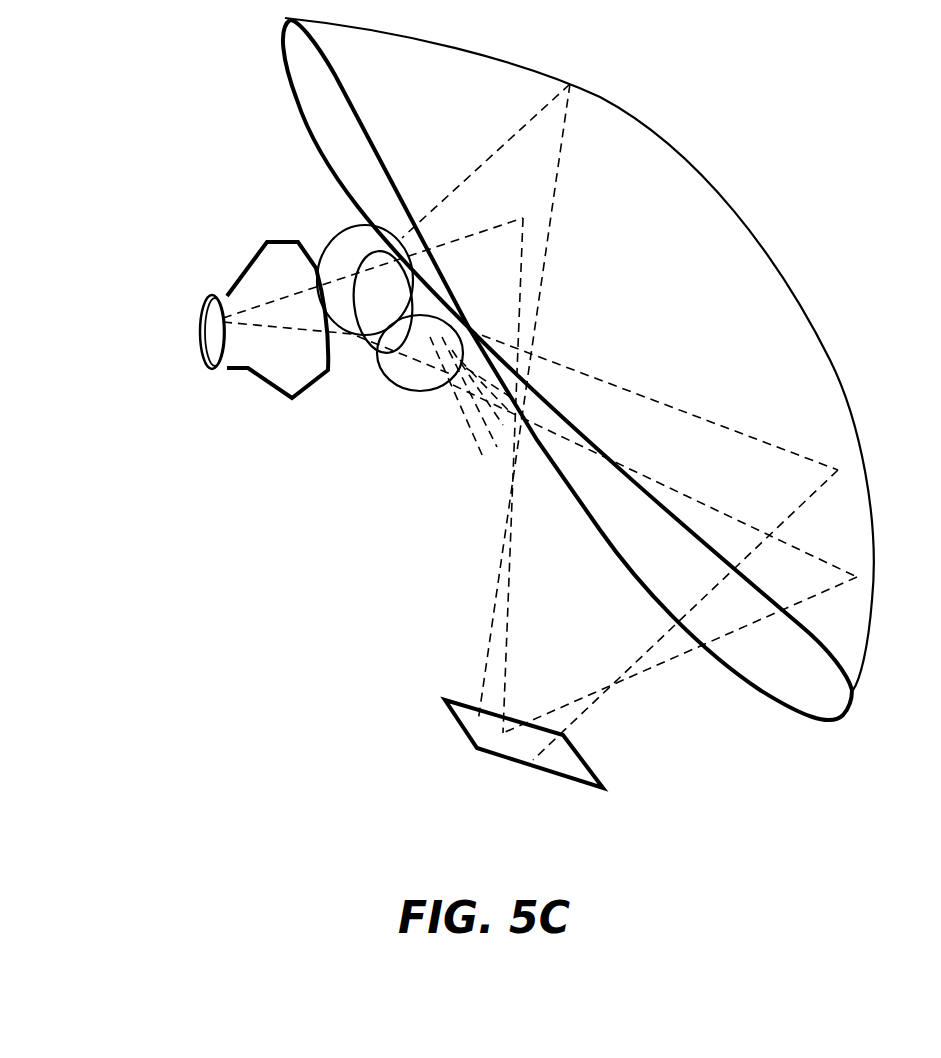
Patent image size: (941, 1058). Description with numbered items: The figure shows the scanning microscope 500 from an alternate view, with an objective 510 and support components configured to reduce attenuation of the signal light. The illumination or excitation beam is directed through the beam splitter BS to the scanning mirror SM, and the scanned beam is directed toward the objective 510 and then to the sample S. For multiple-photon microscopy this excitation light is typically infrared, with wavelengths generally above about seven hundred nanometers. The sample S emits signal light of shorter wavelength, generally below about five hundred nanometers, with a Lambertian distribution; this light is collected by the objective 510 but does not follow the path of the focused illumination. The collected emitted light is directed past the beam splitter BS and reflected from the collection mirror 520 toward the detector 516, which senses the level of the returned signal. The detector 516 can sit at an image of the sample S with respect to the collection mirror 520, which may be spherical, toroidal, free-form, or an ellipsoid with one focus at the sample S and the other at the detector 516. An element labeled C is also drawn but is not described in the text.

The scanning microscope 500 is at (145, 55).
The objective 510 is at (238, 268).
The collection mirror 520 is at (603, 97).
The detector 516 is at (463, 730).
The scanning mirror SM is at (333, 243).
The sample S is at (222, 368).
The beam splitter BS is at (363, 350).
The collimating lens C is at (398, 390).